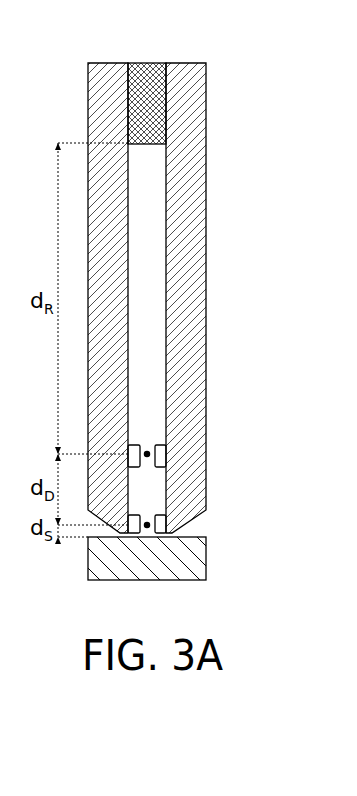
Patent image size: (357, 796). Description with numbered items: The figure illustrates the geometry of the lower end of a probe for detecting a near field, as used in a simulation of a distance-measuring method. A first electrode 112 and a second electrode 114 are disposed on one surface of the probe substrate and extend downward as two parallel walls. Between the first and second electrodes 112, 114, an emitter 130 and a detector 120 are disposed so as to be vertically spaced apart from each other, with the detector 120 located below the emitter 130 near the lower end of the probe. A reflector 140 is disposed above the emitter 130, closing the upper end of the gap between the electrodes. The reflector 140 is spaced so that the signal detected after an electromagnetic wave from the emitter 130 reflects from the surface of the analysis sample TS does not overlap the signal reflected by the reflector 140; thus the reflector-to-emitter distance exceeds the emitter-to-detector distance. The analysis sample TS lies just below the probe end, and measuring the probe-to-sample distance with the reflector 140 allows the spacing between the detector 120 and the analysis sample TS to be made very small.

The first electrode 112 is at (110, 63).
The second electrode 114 is at (183, 63).
The reflector 140 is at (160, 117).
The emitter 130 is at (150, 442).
The detector 120 is at (150, 512).
The analysis sample TS is at (200, 559).